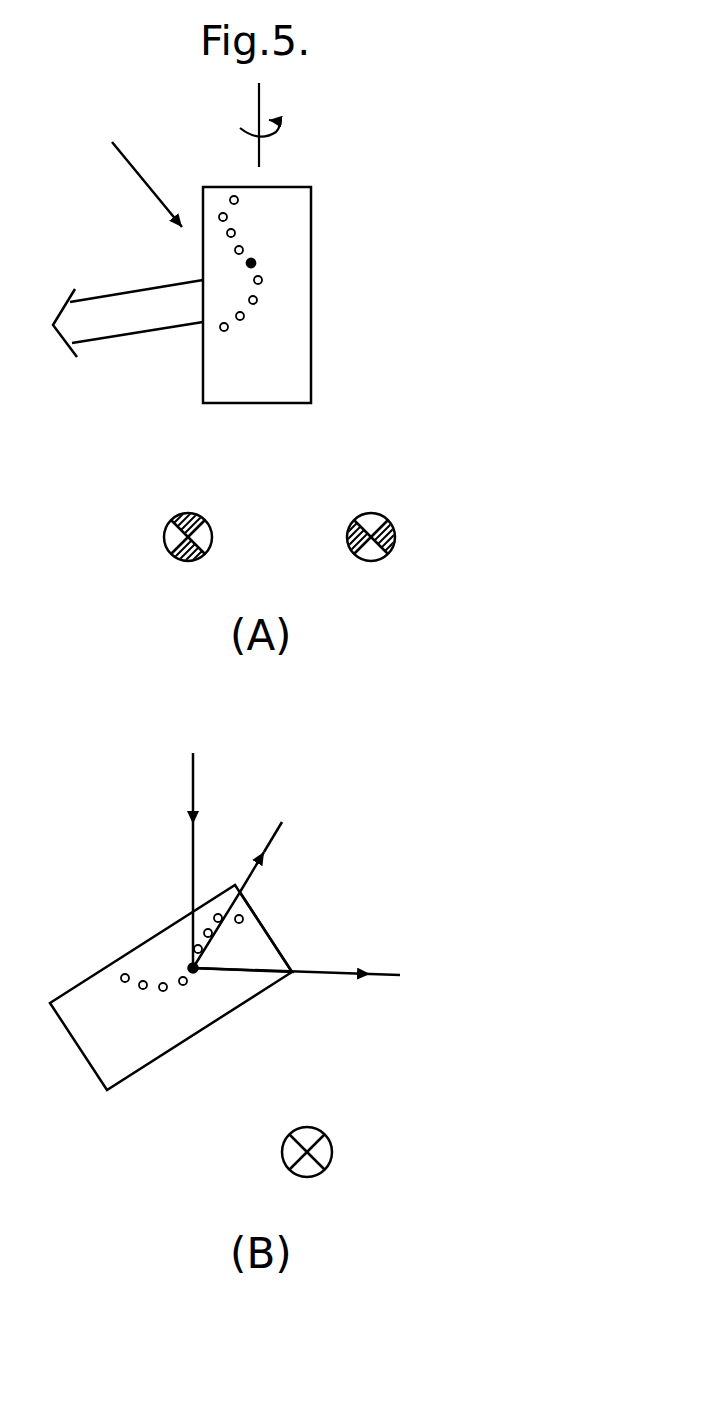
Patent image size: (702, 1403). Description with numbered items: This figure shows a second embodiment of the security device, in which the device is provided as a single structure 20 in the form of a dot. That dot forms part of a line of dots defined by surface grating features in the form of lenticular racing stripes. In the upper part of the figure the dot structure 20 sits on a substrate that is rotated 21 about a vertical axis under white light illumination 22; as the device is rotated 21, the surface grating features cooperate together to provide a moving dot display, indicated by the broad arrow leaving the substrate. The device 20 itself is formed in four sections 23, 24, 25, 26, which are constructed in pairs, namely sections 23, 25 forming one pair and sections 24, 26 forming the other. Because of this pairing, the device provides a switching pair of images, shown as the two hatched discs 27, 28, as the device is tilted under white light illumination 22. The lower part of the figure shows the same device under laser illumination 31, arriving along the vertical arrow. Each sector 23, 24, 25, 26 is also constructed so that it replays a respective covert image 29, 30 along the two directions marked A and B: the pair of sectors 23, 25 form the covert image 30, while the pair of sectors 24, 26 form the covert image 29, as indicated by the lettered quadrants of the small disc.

The single structure 20 is at (256, 263).
The rotation 21 is at (275, 132).
The white light illumination 22 is at (149, 187).
The first section 23 is at (198, 513).
The second section 24 is at (213, 537).
The third section 25 is at (188, 562).
The fourth section 26 is at (163, 537).
The first switching image 27 is at (167, 509).
The second switching image 28 is at (399, 506).
The covert image 29 is at (301, 793).
The covert image 30 is at (441, 971).
The laser illumination 31 is at (193, 790).